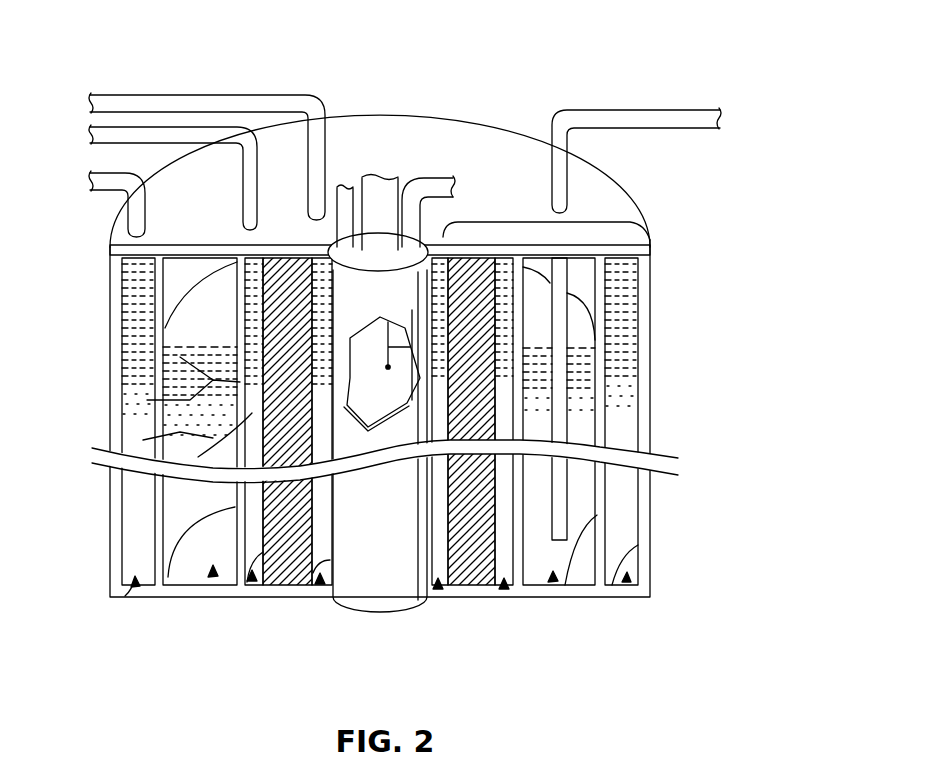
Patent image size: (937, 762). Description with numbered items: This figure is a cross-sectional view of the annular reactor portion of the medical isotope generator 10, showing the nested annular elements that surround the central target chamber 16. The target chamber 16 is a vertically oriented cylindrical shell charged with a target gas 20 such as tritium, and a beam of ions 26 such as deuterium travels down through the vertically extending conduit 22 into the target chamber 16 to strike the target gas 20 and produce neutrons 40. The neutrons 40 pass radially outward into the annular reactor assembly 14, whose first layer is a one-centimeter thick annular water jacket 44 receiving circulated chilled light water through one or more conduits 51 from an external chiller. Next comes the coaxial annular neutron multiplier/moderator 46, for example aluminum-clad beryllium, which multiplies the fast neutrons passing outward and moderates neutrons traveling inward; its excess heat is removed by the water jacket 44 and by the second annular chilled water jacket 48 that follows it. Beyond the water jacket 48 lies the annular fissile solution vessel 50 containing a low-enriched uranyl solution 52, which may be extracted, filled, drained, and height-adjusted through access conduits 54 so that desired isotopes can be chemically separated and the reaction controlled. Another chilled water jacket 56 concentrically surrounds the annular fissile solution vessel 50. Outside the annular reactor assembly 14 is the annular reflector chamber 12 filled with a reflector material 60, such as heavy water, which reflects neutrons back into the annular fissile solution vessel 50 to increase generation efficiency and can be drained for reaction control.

The medical isotope generator 10 is at (852, 145).
The annular reflector chamber 12 is at (722, 366).
The annular reactor assembly 14 is at (503, 222).
The target chamber 16 is at (380, 588).
The target gas 20 is at (380, 400).
The conduit 22 is at (380, 177).
The beam of ions 26 is at (410, 347).
The neutrons 40 is at (350, 377).
The annular water jacket 44 is at (318, 280).
The neutron multiplier/moderator 46 is at (283, 597).
The second annular chilled water jacket 48 is at (252, 572).
The annular fissile solution vessel 50 is at (213, 567).
The conduits 51 is at (177, 94).
The solution 52 is at (203, 353).
The conduits 54 is at (606, 111).
The water jacket 56 is at (125, 596).
The reflector material 60 is at (17, 429).